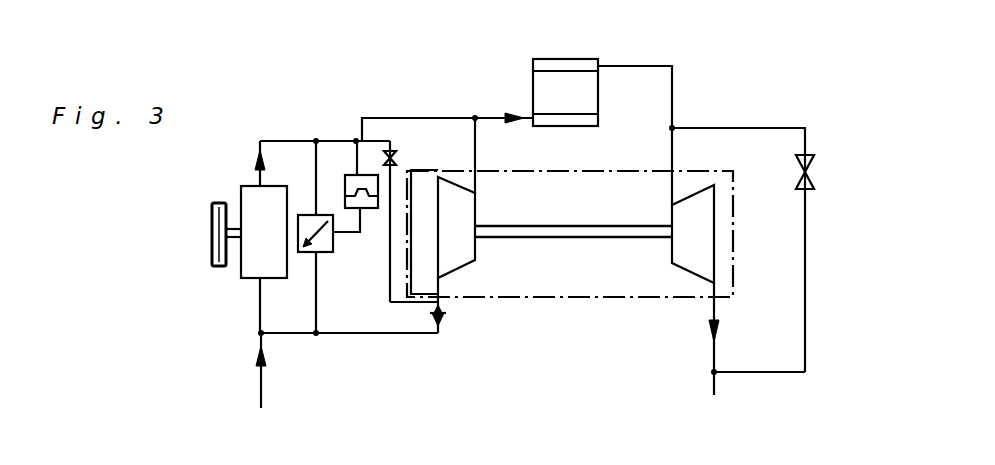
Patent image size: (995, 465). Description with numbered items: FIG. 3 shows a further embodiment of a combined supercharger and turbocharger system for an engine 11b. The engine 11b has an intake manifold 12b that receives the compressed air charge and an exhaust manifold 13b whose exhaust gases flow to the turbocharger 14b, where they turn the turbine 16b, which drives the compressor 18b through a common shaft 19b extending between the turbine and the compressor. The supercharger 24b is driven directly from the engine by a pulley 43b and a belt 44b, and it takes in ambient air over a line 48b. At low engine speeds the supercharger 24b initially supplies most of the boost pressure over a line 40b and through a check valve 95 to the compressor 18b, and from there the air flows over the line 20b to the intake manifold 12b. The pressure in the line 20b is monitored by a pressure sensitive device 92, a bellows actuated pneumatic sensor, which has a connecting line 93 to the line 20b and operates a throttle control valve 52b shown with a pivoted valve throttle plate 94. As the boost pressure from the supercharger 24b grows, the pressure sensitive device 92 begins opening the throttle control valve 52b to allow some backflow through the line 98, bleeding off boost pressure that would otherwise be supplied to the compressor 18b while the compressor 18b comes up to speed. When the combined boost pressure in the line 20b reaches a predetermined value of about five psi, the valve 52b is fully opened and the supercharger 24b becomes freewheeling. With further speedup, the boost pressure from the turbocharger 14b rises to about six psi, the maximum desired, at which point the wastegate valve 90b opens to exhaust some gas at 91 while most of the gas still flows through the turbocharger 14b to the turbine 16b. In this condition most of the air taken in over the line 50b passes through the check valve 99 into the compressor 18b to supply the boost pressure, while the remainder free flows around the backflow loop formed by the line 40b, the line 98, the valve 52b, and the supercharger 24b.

The engine 11b is at (598, 93).
The intake manifold 12b is at (600, 120).
The exhaust manifold 13b is at (572, 59).
The turbocharger 14b is at (607, 299).
The turbine 16b is at (683, 266).
The compressor 18b is at (478, 206).
The common shaft 19b is at (646, 208).
The line 20b is at (480, 140).
The supercharger 24b is at (245, 186).
The line 40b is at (276, 141).
The pulley 43b is at (212, 233).
The belt 44b is at (217, 203).
The line 48b is at (261, 400).
The line 50b is at (350, 335).
The throttle control valve 52b is at (320, 256).
The wastegate valve 90b is at (814, 182).
The exhaust gas outlet 91 is at (806, 318).
The pressure sensitive device 92 is at (344, 172).
The connecting line 93 is at (415, 118).
The pivoted valve throttle plate 94 is at (308, 214).
The check valve 95 is at (396, 155).
The line 98 is at (316, 141).
The check valve 99 is at (441, 321).